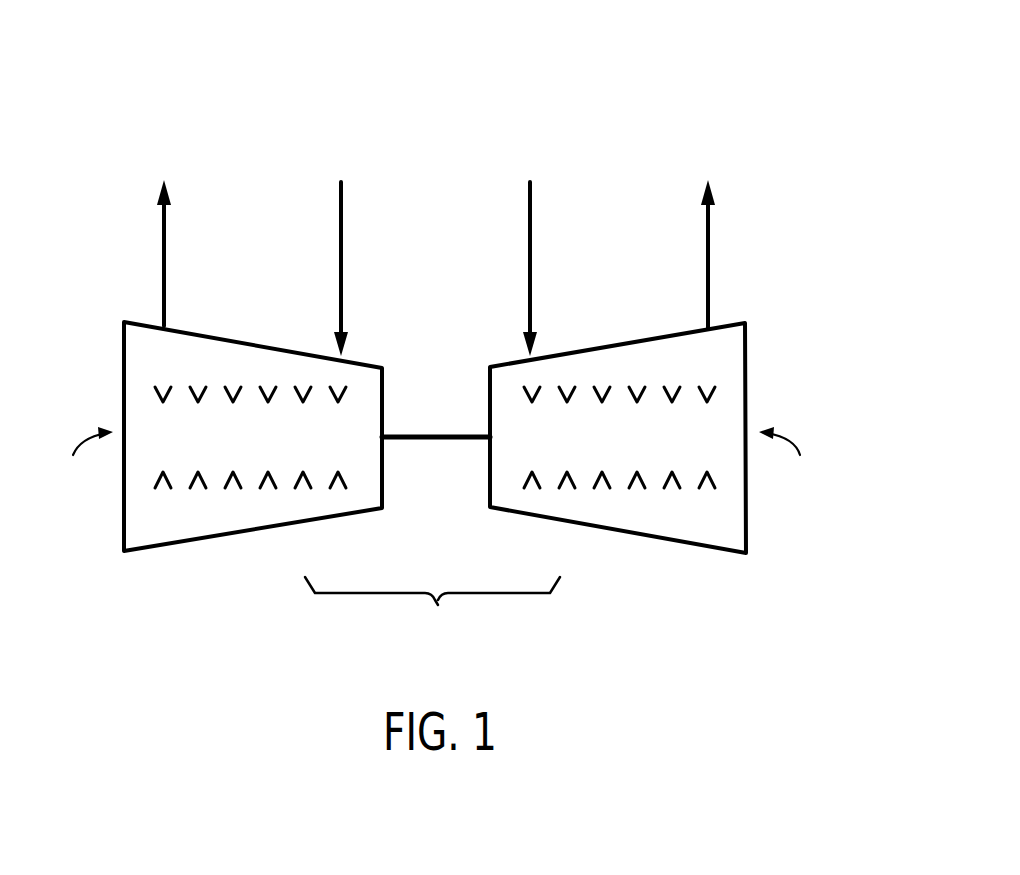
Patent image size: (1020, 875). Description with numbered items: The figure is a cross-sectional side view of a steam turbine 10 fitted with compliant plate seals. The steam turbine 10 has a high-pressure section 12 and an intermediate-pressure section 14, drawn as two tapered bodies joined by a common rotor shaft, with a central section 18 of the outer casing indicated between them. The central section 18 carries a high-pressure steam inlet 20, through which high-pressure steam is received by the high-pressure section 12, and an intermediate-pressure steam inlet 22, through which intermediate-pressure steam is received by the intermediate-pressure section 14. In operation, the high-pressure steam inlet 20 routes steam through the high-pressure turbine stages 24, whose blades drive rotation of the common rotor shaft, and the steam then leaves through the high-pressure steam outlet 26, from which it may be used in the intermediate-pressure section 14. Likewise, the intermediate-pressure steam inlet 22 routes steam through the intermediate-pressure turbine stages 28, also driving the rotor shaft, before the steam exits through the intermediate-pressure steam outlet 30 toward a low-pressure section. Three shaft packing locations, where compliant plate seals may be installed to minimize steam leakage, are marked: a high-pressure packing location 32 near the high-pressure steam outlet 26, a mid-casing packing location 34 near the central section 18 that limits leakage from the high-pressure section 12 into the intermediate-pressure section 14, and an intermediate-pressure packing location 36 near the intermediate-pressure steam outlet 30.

The steam turbine 10 is at (658, 82).
The high-pressure section 12 is at (198, 543).
The intermediate-pressure section 14 is at (670, 540).
The central section 18 is at (437, 603).
The high-pressure steam inlet 20 is at (343, 262).
The intermediate-pressure steam inlet 22 is at (532, 262).
The high-pressure turbine stages 24 is at (240, 394).
The high-pressure steam outlet 26 is at (162, 262).
The intermediate-pressure turbine stages 28 is at (608, 394).
The intermediate-pressure steam outlet 30 is at (710, 262).
The high-pressure packing location 32 is at (83, 459).
The mid-casing packing location 34 is at (421, 424).
The intermediate-pressure packing location 36 is at (789, 457).